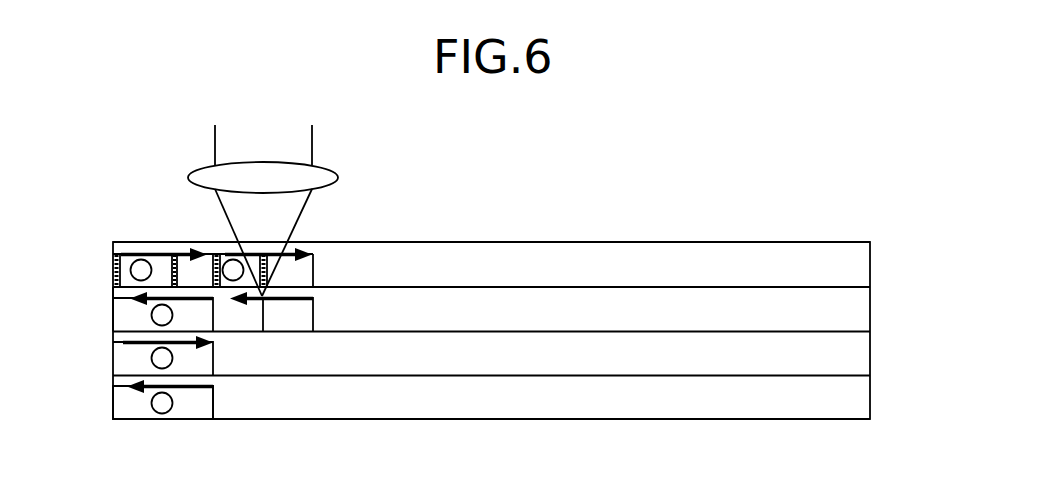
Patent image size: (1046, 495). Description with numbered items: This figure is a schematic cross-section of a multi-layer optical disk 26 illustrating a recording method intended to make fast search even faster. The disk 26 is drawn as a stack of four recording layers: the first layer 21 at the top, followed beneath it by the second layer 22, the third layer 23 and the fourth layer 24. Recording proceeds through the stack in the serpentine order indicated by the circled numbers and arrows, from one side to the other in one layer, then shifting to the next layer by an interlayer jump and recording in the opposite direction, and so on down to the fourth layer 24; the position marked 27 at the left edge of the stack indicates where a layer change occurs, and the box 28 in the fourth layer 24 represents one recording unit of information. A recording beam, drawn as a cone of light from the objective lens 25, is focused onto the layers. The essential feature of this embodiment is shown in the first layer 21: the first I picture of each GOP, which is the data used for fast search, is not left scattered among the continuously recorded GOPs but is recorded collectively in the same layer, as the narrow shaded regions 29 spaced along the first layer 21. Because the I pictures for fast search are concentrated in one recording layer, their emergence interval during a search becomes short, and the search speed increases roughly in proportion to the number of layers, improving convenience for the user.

The first layer 21 is at (860, 266).
The second recording layer 22 is at (860, 311).
The third recording layer 23 is at (860, 354).
The fourth recording layer 24 is at (860, 399).
The objective lens 25 is at (285, 173).
The multilayer optical recording medium 26 is at (857, 484).
The recording start position 27 is at (122, 313).
The recorded area 28 is at (192, 405).
The gap area 29 is at (262, 266).